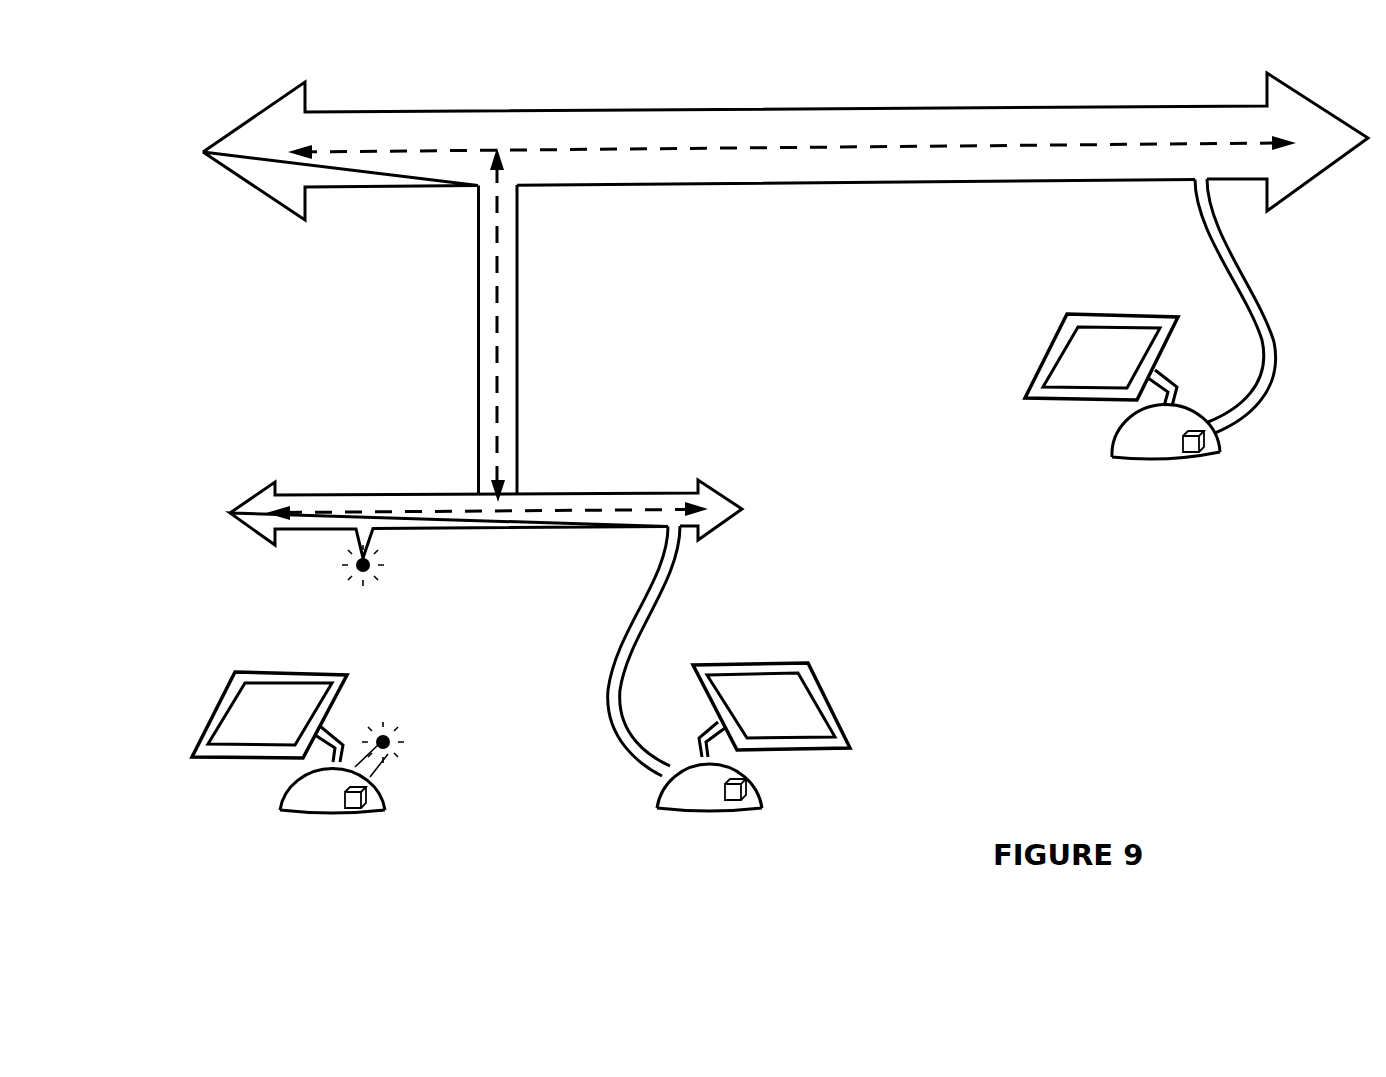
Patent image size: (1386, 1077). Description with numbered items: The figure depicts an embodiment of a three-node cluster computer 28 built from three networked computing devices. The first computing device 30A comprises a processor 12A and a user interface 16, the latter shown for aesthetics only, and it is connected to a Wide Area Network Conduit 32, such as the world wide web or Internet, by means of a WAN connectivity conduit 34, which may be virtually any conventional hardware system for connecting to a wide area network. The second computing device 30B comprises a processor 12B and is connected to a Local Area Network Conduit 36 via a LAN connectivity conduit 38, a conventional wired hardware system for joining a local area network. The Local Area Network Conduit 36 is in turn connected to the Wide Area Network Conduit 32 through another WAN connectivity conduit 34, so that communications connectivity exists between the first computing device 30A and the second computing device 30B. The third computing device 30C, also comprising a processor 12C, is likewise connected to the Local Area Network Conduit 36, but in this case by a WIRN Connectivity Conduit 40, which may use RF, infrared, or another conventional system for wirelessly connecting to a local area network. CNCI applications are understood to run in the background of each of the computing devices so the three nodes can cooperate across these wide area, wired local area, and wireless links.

The processor 12A is at (1205, 444).
The processor 12B is at (743, 796).
The processor 12C is at (367, 808).
The user interface 16 is at (1030, 398).
The 3-node cluster computer 28 is at (785, 410).
The first computing device 30A is at (1061, 402).
The second computing device 30B is at (782, 759).
The third computing device 30C is at (286, 718).
The Wide Area Network Conduit 32 is at (966, 106).
The WAN connectivity conduit 34 is at (479, 318).
The Local Area Network Conduit 36 is at (642, 493).
The LAN connectivity conduit 38 is at (650, 612).
The WIRN Connectivity Conduit 40 is at (397, 552).